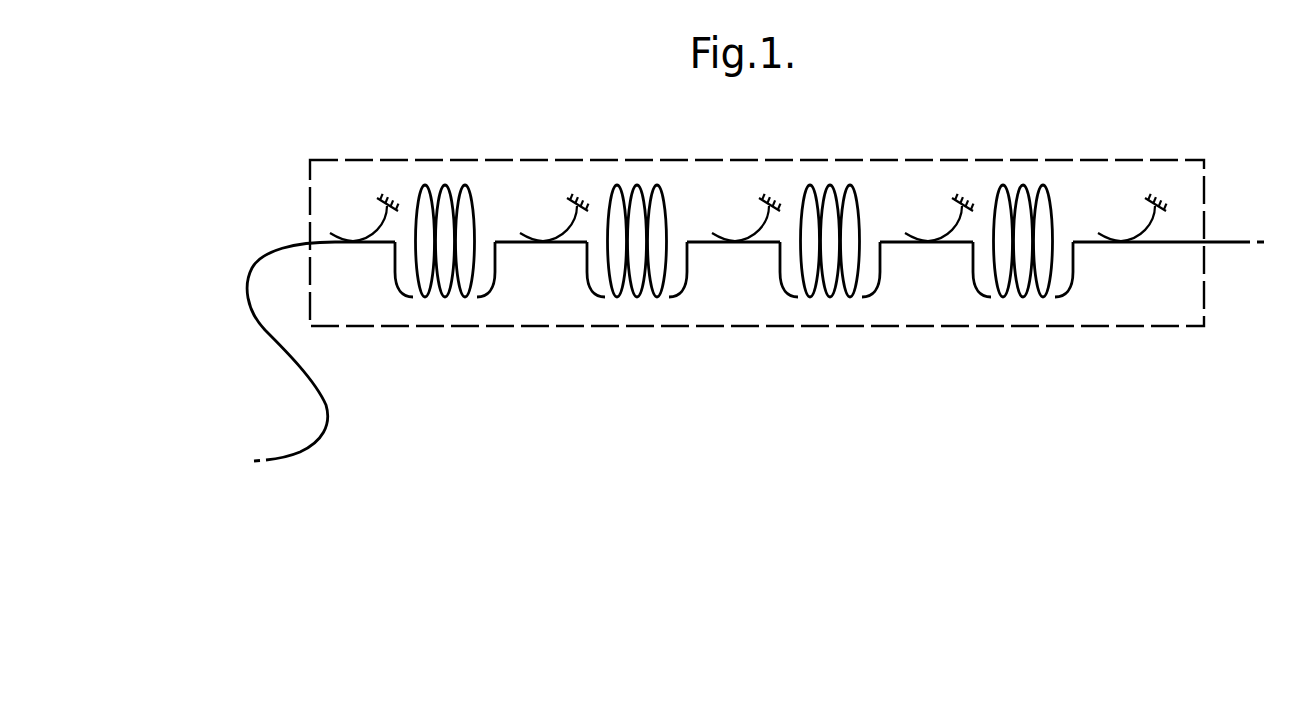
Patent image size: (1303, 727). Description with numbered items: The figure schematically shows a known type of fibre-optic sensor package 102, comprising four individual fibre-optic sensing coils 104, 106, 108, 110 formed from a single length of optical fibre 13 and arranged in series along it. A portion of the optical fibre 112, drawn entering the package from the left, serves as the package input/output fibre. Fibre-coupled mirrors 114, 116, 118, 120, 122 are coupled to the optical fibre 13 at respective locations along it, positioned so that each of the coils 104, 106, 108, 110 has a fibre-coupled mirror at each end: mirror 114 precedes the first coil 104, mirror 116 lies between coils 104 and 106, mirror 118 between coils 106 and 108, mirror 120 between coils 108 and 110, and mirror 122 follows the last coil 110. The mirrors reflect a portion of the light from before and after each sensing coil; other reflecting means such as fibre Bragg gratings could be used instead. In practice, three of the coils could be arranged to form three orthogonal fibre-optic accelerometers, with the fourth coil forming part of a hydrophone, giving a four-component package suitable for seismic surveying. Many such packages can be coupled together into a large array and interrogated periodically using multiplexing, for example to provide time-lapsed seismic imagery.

The optical fibre 13 is at (1231, 244).
The fibre-optic sensor package 102 is at (740, 328).
The fibre-optic sensing coil 104 is at (432, 298).
The fibre-optic sensing coil 106 is at (608, 298).
The fibre-optic sensing coil 108 is at (838, 298).
The fibre-optic sensing coil 110 is at (1030, 298).
The input/output fibre 112 is at (284, 351).
The fibre-coupled mirror 114 is at (378, 196).
The fibre-coupled mirror 116 is at (568, 196).
The fibre-coupled mirror 118 is at (760, 196).
The fibre-coupled mirror 120 is at (953, 196).
The fibre-coupled mirror 122 is at (1146, 196).